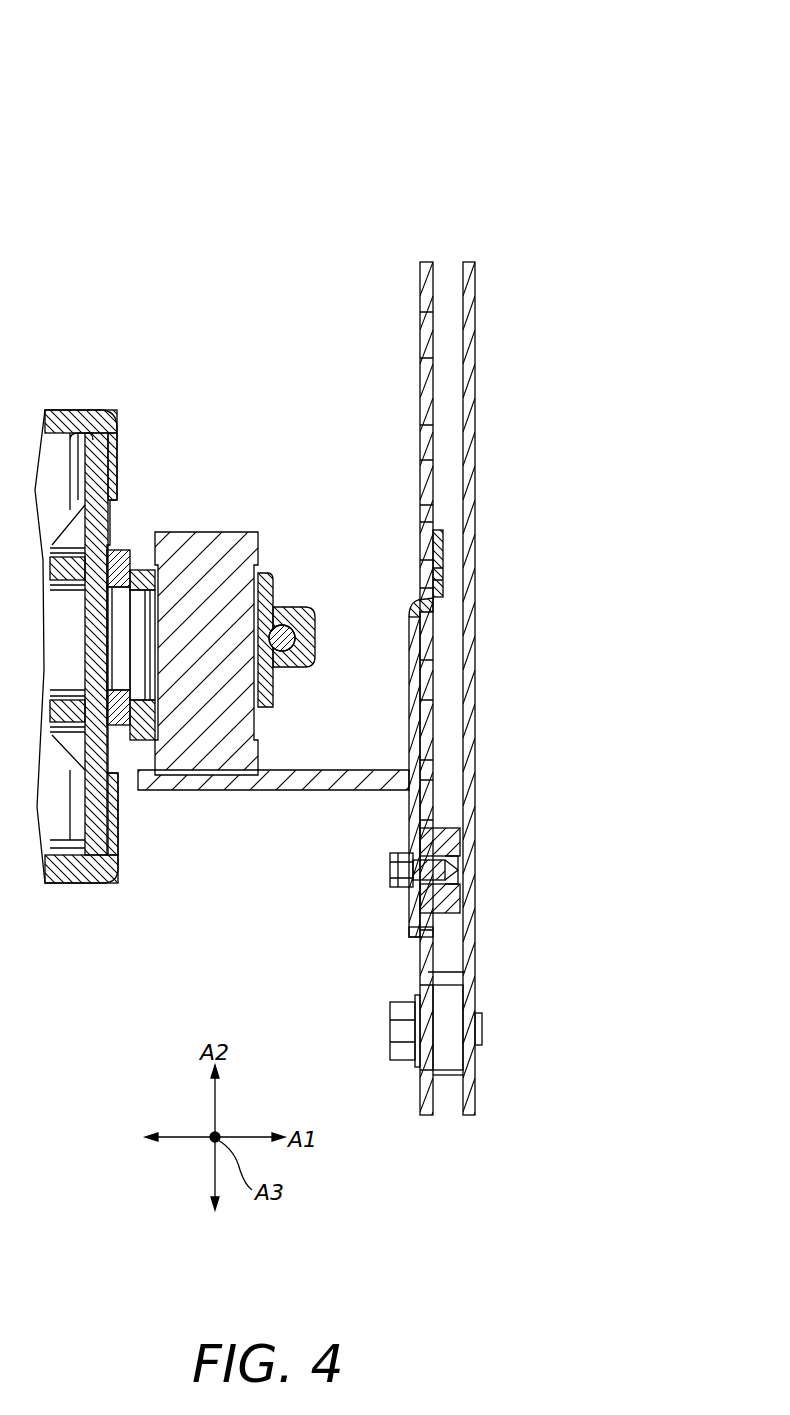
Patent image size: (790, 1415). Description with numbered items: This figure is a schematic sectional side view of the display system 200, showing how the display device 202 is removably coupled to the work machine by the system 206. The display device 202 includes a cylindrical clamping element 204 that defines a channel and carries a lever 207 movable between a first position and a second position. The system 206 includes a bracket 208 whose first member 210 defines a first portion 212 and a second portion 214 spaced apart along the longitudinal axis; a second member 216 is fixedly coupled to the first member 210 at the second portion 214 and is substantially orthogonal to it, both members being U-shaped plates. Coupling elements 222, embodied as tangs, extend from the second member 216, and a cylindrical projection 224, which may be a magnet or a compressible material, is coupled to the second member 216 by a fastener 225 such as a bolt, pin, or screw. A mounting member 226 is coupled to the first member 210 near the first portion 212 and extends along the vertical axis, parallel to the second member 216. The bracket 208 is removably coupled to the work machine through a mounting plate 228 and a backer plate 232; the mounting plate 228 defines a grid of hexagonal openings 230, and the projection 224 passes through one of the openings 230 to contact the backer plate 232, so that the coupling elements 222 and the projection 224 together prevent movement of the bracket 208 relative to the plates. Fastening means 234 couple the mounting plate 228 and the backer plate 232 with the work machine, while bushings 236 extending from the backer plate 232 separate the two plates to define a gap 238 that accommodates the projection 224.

The display system 200 is at (640, 62).
The display device 202 is at (76, 646).
The clamping element 204 is at (274, 548).
The system for removably coupling the display device 206 is at (575, 890).
The lever 207 is at (303, 607).
The bracket 208 is at (332, 816).
The first member 210 is at (277, 795).
The first portion 212 is at (129, 806).
The second portion 214 is at (398, 742).
The second member 216 is at (407, 637).
The coupling elements 222 is at (443, 545).
The projection 224 is at (452, 841).
The fastener 225 is at (432, 824).
The mounting member 226 is at (227, 675).
The mounting plate 228 is at (440, 975).
The openings 230 is at (410, 398).
The backer plate 232 is at (470, 950).
The fastening means 234 is at (392, 1017).
The bushings 236 is at (447, 1057).
The gap 238 is at (437, 954).